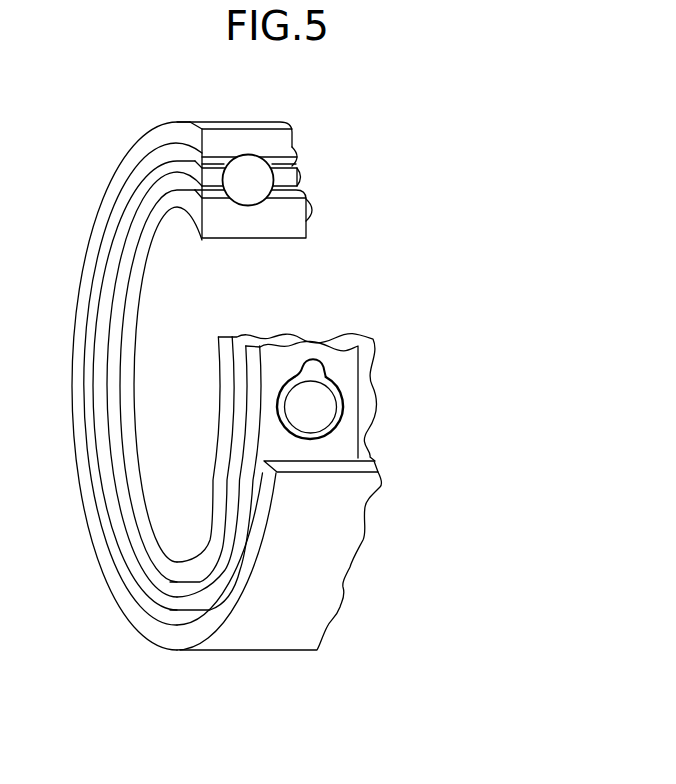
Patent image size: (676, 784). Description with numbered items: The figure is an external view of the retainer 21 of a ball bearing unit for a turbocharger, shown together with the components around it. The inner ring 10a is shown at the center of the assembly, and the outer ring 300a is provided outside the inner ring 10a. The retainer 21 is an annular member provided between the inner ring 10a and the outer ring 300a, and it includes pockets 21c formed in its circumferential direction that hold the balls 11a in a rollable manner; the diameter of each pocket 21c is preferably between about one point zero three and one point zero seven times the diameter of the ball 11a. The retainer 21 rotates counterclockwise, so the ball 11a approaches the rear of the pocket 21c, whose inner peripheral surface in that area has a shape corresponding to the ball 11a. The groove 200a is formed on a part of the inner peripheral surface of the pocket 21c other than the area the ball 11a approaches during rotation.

The outer ring 300a is at (293, 138).
The retainer 21 is at (299, 178).
The inner ring 10a is at (308, 214).
The ball 11a is at (245, 154).
The groove 200a is at (313, 359).
The pocket 21c is at (343, 385).